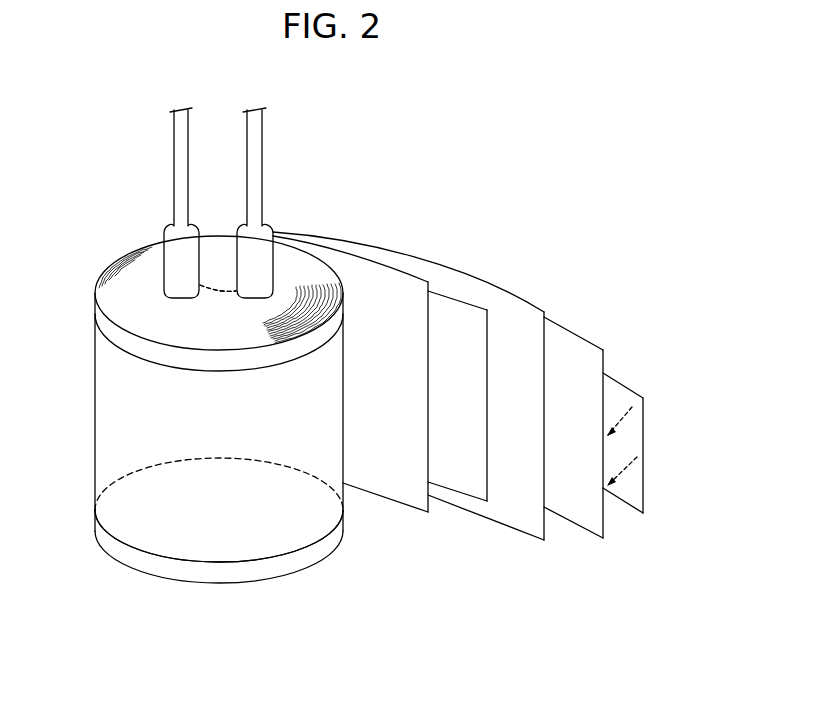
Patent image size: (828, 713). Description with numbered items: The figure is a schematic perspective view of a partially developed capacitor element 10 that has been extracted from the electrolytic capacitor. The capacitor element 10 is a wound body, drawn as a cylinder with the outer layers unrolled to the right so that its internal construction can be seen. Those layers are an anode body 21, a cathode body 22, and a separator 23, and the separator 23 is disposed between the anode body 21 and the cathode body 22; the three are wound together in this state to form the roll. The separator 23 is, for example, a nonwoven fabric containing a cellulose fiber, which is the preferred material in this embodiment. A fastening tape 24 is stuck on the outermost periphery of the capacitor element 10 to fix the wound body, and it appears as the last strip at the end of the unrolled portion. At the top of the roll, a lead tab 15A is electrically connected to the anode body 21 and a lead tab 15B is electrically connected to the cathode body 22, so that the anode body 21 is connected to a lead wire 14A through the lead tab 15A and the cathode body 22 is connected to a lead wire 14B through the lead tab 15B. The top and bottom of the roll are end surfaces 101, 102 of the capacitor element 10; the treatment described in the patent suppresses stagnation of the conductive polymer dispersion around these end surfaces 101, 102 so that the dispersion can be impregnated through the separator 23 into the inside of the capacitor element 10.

The capacitor element 10 is at (113, 570).
The end surface 101 is at (222, 245).
The end surface 102 is at (208, 548).
The lead wire 14A is at (174, 150).
The lead wire 14B is at (255, 143).
The lead tab 15A is at (170, 233).
The lead tab 15B is at (266, 233).
The anode body 21 is at (465, 484).
The cathode body 22 is at (582, 529).
The separator 23 is at (396, 488).
The fastening tape 24 is at (644, 442).